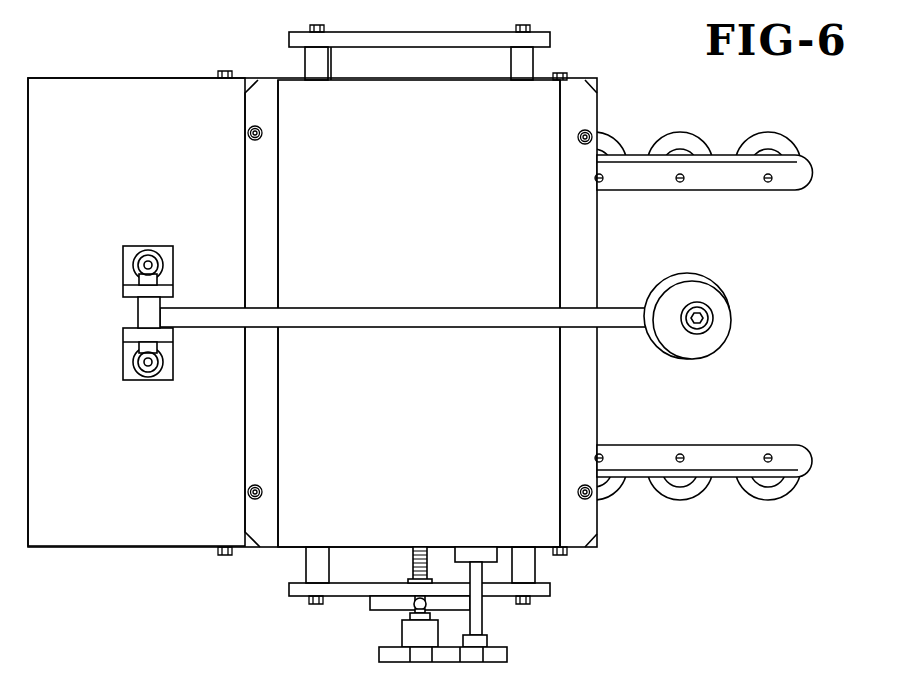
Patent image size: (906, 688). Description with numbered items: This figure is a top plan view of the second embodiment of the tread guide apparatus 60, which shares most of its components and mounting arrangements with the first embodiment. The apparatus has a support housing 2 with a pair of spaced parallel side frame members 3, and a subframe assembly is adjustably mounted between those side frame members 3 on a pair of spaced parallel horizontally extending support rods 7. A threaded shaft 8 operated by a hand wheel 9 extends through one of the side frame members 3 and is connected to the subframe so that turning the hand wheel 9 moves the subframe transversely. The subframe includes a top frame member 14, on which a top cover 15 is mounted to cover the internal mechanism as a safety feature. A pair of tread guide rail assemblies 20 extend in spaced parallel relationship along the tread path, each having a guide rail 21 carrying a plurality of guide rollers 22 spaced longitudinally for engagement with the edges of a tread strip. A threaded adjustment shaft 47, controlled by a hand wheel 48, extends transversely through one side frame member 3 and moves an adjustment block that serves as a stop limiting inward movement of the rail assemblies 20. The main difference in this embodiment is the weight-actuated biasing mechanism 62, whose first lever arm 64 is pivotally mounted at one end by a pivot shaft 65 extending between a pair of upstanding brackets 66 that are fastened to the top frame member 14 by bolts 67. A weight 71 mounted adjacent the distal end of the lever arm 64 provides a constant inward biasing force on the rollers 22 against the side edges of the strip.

The support housing 2 is at (174, 72).
The side frame members 3 is at (417, 37).
The support rods 7 is at (312, 62).
The threaded shaft 8 is at (413, 560).
The hand wheel 9 is at (397, 662).
The top frame member 14 is at (163, 484).
The top cover 15 is at (437, 484).
The tread guide rail assemblies 20 is at (689, 319).
The guide rail 21 is at (741, 186).
The guide rollers 22 is at (692, 133).
The threaded adjustment shaft 47 is at (482, 617).
The hand wheel 48 is at (497, 663).
The tread guide apparatus 60 is at (180, 570).
The biasing mechanism 62 is at (608, 345).
The first lever arm 64 is at (392, 306).
The pivot shaft 65 is at (138, 315).
The brackets 66 is at (127, 290).
The bolts 67 is at (148, 252).
The weight 71 is at (725, 317).